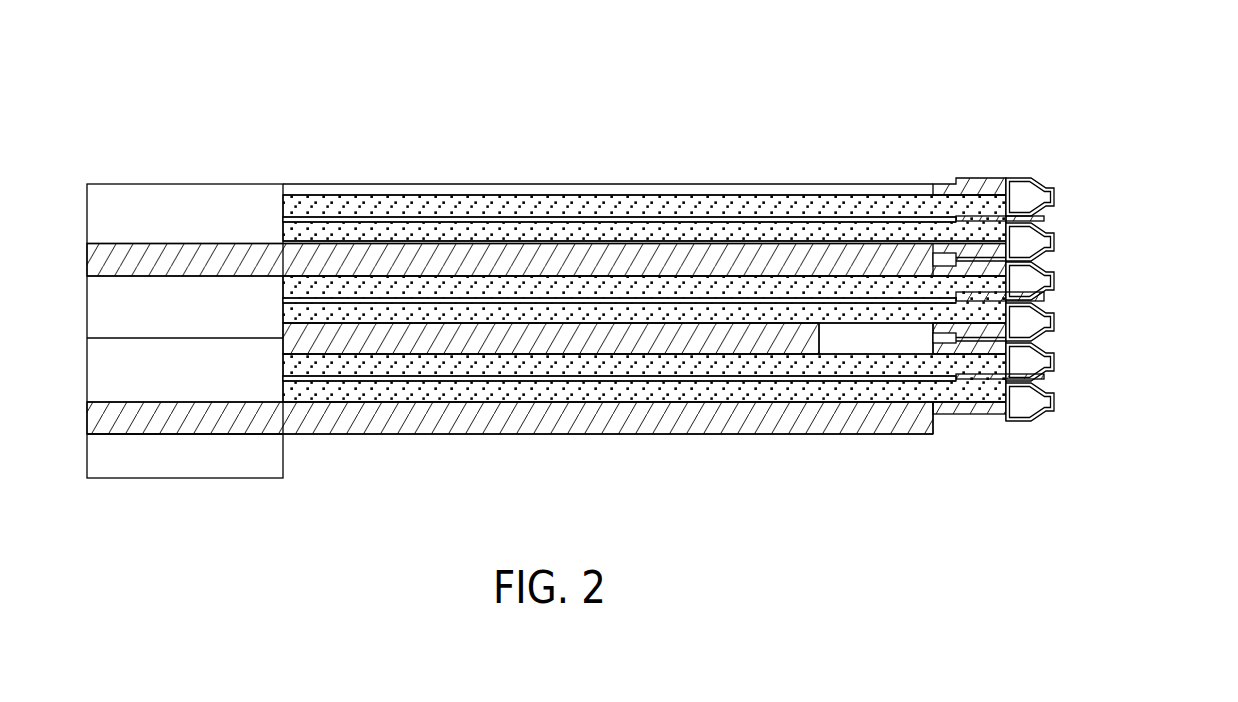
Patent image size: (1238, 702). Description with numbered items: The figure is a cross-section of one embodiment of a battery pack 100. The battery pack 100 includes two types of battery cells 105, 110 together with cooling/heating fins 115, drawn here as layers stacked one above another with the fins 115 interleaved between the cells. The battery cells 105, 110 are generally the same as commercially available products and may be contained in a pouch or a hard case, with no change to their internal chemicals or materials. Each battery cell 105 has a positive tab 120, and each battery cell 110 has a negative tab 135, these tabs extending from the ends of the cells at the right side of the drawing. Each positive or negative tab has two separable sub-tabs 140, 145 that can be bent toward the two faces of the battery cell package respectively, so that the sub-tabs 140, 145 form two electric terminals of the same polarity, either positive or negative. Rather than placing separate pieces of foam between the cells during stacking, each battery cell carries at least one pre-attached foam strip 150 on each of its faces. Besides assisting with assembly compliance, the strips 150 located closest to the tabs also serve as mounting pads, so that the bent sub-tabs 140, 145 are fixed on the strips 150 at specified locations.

The battery pack 100 is at (128, 101).
The battery cell 105 is at (282, 356).
The battery cell 110 is at (282, 193).
The cooling/heating fin 115 is at (800, 250).
The positive tab 120 is at (1134, 362).
The negative tab 135 is at (1134, 202).
The sub-tab 140 is at (1053, 241).
The sub-tab 145 is at (1053, 197).
The foam strip 150 is at (942, 185).